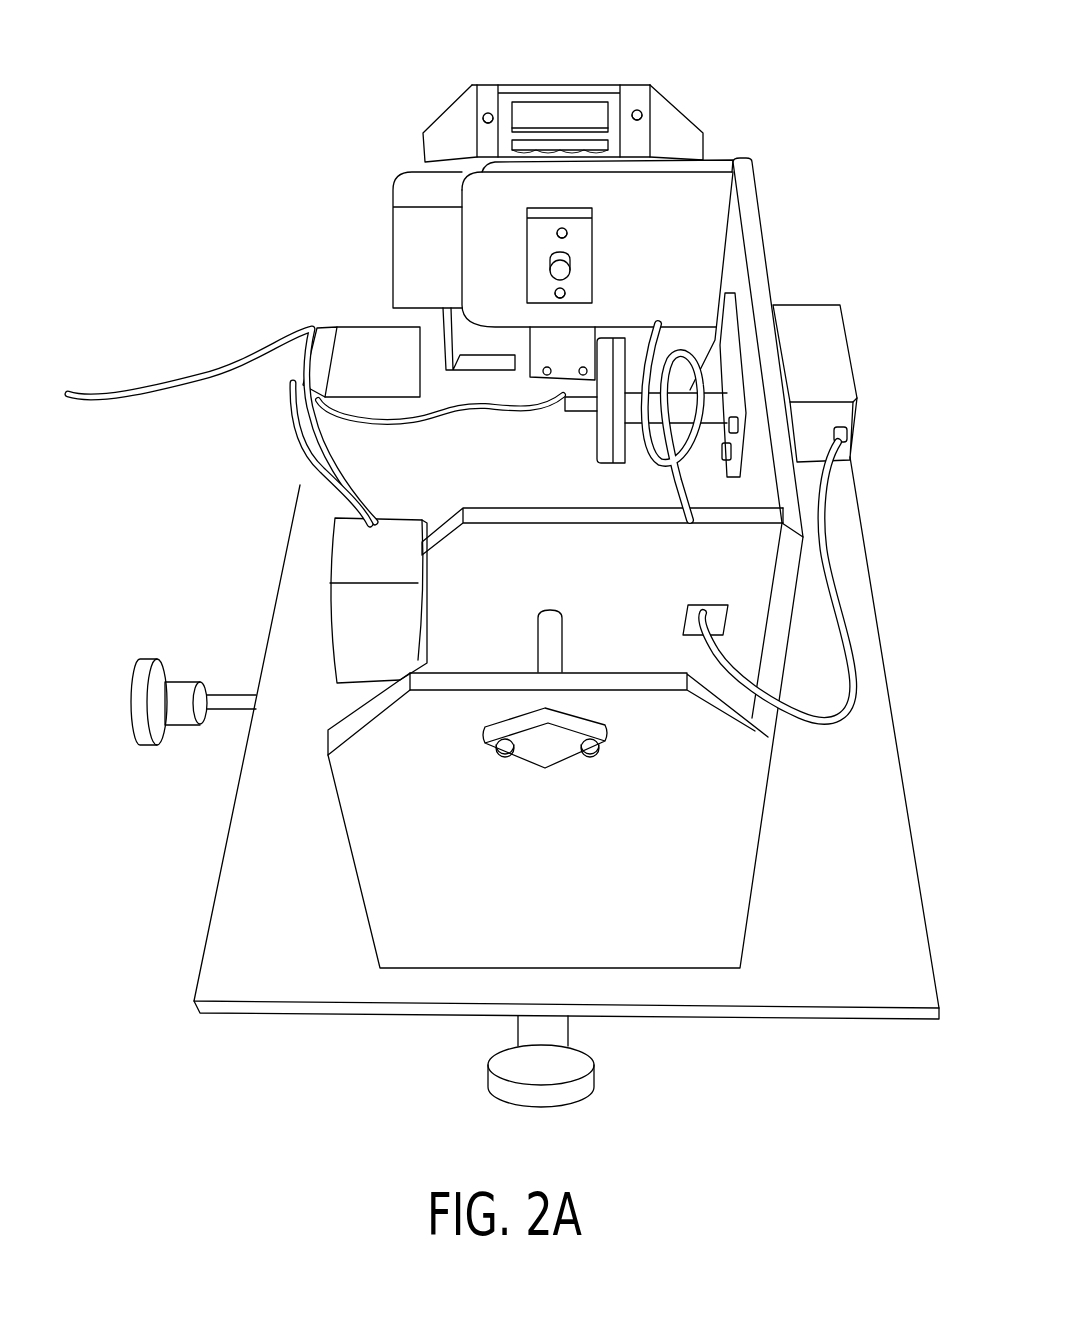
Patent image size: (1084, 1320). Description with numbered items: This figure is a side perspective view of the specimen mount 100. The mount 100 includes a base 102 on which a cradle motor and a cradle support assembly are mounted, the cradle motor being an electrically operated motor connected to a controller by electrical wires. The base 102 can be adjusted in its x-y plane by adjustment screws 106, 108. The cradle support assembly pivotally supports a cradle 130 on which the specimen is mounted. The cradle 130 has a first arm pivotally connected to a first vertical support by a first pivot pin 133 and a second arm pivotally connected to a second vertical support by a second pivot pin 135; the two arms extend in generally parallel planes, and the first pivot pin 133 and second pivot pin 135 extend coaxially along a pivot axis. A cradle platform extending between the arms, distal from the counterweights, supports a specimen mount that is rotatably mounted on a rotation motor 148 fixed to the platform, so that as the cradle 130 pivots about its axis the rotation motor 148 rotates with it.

The mount 100 is at (723, 63).
The base 102 is at (235, 980).
The adjustment screw 106 is at (157, 660).
The adjustment screw 108 is at (587, 1097).
The cradle 130 is at (752, 237).
The first pivot pin 133 is at (553, 270).
The second pivot pin 135 is at (548, 645).
The rotation motor 148 is at (865, 353).